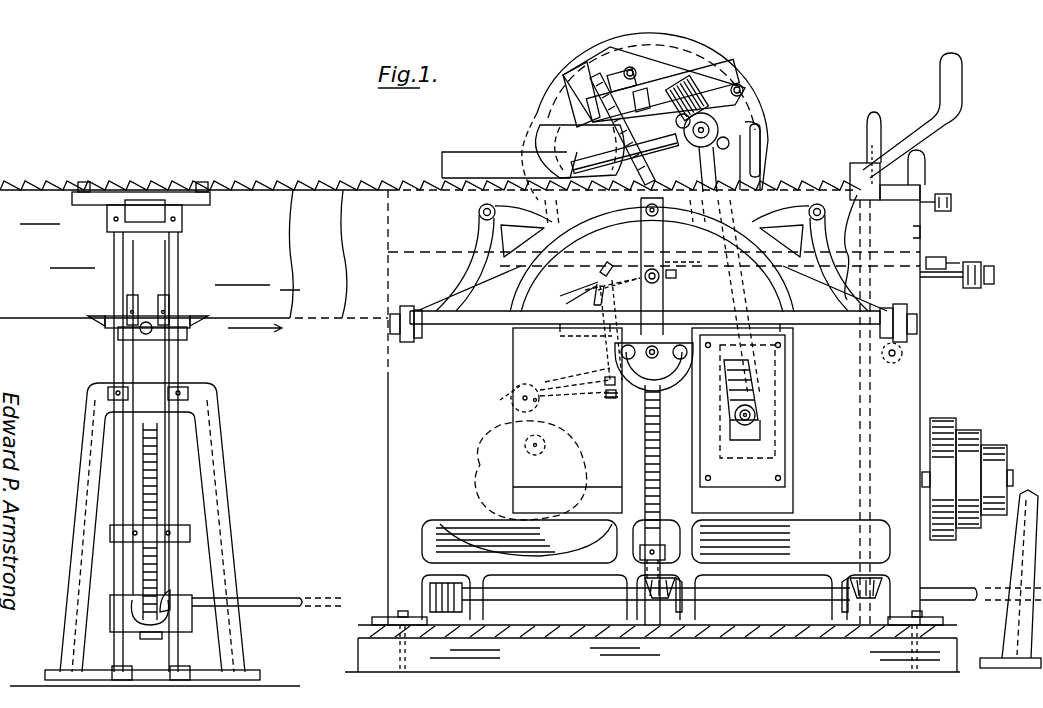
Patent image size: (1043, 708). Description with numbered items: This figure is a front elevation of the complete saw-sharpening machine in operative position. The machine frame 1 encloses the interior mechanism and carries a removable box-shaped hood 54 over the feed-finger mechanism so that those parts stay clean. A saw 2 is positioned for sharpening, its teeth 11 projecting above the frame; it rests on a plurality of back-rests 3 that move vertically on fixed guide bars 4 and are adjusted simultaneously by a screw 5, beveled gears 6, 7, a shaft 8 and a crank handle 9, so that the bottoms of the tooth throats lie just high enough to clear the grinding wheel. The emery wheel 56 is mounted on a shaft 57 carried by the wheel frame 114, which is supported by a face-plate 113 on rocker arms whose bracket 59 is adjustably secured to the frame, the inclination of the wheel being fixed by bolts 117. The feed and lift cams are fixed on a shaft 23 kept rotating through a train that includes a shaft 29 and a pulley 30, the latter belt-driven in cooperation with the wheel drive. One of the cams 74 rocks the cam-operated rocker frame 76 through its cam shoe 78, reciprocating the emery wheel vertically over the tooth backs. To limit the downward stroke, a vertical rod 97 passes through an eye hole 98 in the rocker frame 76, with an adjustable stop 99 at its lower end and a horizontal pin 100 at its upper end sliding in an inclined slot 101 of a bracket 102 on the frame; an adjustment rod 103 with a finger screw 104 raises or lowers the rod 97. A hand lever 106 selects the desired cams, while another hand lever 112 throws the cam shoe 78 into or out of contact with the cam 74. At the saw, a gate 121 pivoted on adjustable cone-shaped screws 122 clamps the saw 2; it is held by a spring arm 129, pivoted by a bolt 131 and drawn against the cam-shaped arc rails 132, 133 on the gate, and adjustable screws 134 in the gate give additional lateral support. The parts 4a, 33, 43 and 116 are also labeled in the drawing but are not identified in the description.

The machine frame 1 is at (420, 420).
The saw 2 is at (194, 261).
The back-rests 3 is at (128, 332).
The vertical guide bars 4 is at (76, 583).
The guide rods 4a is at (176, 360).
The screw 5 is at (146, 445).
The beveled gear 6 is at (142, 598).
The beveled gear 7 is at (168, 596).
The shaft 8 is at (286, 600).
The crank handle 9 is at (930, 119).
The saw teeth 11 is at (345, 180).
The shaft 23 is at (540, 450).
The shaft 29 is at (1012, 470).
The pulley 30 is at (962, 447).
The nut 33 is at (975, 262).
The set screw 43 is at (951, 196).
The box-shaped hood 54 is at (509, 165).
The emery wheel 56 is at (590, 78).
The shaft 57 is at (738, 70).
The bracket 59 is at (768, 164).
The cams 74 is at (485, 470).
The cam-operated rocker frame 76 is at (560, 382).
The cam shoe 78 is at (505, 400).
The vertical rod 97 is at (573, 337).
The eye hole 98 is at (600, 392).
The adjustable stop 99 is at (610, 400).
The horizontal pin 100 is at (605, 290).
The inclined slot 101 is at (570, 298).
The bracket 102 is at (567, 292).
The adjustment rod 103 is at (700, 278).
The finger screw 104 is at (938, 258).
The hand lever 106 is at (875, 118).
The hand lever 112 is at (925, 165).
The face-plate 113 is at (766, 124).
The wheel frame 114 is at (688, 40).
The slot 116 is at (762, 150).
The bolts 117 is at (745, 86).
The gate 121 is at (470, 327).
The cone-shaped screws 122 is at (390, 328).
The spring arm 129 is at (664, 279).
The bolt 131 is at (615, 350).
The arc-shaped rail 132 is at (668, 395).
The arc-shaped rail 133 is at (522, 292).
The adjustable screws 134 is at (478, 211).